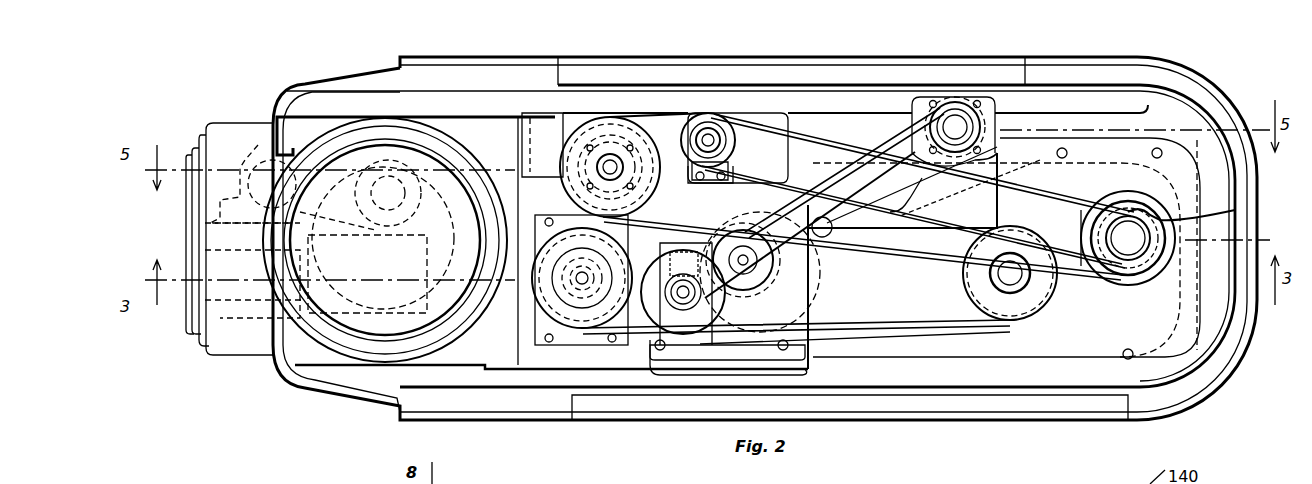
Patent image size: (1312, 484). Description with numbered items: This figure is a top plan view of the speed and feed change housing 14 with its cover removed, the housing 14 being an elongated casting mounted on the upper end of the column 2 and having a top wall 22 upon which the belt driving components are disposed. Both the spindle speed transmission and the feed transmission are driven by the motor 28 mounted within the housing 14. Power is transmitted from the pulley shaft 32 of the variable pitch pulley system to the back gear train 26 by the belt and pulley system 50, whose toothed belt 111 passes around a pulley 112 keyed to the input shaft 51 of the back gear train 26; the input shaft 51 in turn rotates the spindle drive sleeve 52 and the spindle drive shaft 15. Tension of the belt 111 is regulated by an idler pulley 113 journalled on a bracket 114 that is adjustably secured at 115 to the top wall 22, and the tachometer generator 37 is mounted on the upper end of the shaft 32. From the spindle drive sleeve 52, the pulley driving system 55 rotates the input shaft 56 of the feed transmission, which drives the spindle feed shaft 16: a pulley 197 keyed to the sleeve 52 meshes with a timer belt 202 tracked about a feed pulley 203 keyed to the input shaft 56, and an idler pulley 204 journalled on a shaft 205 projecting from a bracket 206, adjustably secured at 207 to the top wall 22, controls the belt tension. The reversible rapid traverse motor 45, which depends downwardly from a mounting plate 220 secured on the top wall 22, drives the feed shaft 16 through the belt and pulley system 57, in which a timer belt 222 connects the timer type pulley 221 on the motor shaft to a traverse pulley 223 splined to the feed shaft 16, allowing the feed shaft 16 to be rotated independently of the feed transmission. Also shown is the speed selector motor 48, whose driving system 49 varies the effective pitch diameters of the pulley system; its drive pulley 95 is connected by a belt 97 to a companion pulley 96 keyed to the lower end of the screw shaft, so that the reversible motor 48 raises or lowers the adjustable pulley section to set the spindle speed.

The column 2 is at (1259, 297).
The housing 14 is at (1166, 52).
The spindle drive shaft 15 is at (1126, 238).
The spindle feed shaft 16 is at (955, 125).
The top wall 22 is at (1172, 351).
The back gear train 26 is at (1192, 157).
The motor 28 is at (345, 325).
The pulley shaft 32 is at (486, 240).
The tachometer generator 37 is at (548, 304).
The rapid traverse motor 45 is at (832, 298).
The speed selector motor 48 is at (190, 330).
The driving system 49 is at (337, 168).
The belt and pulley system 50 is at (917, 340).
The input shaft 51 is at (1012, 280).
The spindle drive sleeve 52 is at (1134, 228).
The pulley driving system 55 is at (1083, 184).
The input shaft 56 is at (606, 167).
The belt and pulley system 57 is at (829, 166).
The drive pulley 95 is at (266, 160).
The companion pulley 96 is at (396, 170).
The belt 97 is at (346, 232).
The belt 111 is at (942, 330).
The pulley 112 is at (1040, 288).
The idler pulley 113 is at (690, 320).
The bracket 114 is at (712, 300).
The adjustable securing means 115 is at (683, 255).
The pulley 197 is at (1235, 210).
The timer belt 202 is at (1085, 197).
The feed pulley 203 is at (596, 125).
The idler pulley 204 is at (705, 114).
The shaft 205 is at (710, 135).
The bracket 206 is at (730, 172).
The adjustable securing means 207 is at (730, 168).
The mounting plate 220 is at (833, 318).
The timer type pulley 221 is at (832, 260).
The timer belt 222 is at (905, 185).
The traverse pulley 223 is at (975, 120).